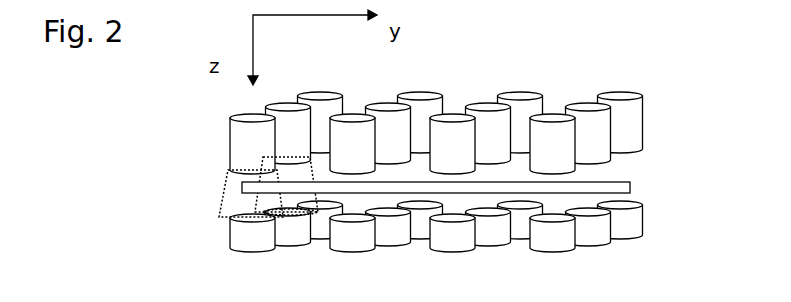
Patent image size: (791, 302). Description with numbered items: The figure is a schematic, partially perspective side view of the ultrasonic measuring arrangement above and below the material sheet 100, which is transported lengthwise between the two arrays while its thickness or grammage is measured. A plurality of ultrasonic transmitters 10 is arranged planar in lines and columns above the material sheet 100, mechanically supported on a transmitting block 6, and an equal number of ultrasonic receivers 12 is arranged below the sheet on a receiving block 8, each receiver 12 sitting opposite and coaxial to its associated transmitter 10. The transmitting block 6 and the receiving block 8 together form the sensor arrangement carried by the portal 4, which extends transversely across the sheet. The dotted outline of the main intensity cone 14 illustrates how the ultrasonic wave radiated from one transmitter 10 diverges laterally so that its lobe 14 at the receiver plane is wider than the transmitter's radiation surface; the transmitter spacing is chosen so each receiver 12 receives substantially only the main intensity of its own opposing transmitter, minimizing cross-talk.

The portal 4 is at (136, 134).
The transmitting block 6 is at (419, 133).
The receiving block 8 is at (420, 226).
The ultrasonic transmitter 10 is at (631, 134).
The ultrasonic receiver 12 is at (636, 232).
The main intensity cone 14 is at (223, 200).
The material sheet 100 is at (613, 183).